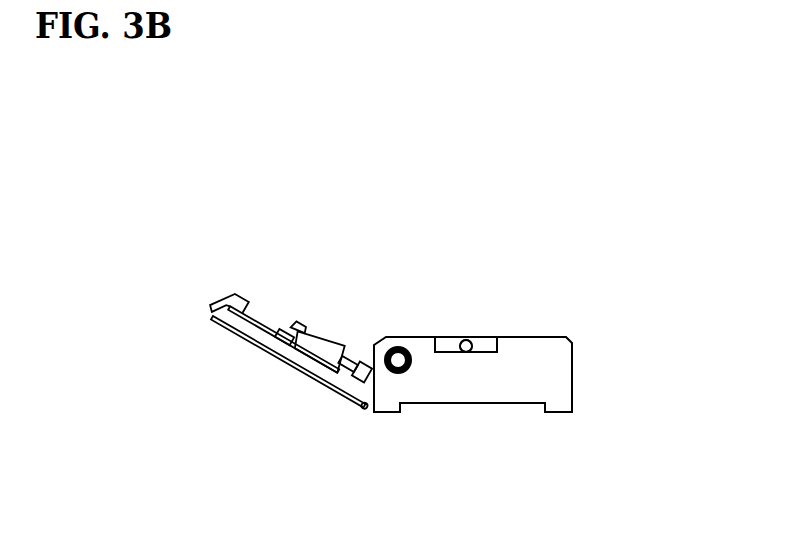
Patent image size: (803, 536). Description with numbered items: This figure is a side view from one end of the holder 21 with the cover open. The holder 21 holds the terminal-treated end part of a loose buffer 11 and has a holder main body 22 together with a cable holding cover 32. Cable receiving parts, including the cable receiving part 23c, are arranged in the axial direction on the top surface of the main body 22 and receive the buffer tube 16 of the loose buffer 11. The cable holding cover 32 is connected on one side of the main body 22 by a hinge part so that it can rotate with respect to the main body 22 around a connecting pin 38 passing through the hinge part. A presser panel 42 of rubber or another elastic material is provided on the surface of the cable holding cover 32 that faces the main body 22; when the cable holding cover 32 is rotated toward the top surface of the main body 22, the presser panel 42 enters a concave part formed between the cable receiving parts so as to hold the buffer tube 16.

The holder 21 is at (494, 255).
The holder main body 22 is at (550, 377).
The cable receiving part 23c is at (473, 338).
The buffer tube 16 is at (466, 352).
The loose buffer 11 is at (458, 333).
The connecting pin 38 is at (395, 360).
The cable holding cover 32 is at (258, 345).
The presser panel 42 is at (333, 338).